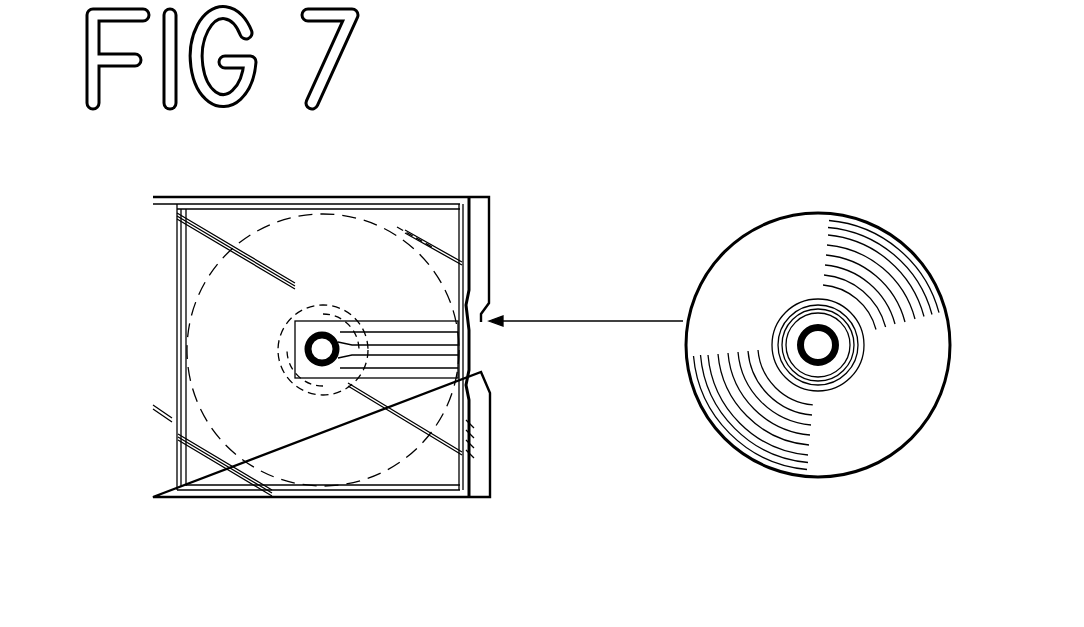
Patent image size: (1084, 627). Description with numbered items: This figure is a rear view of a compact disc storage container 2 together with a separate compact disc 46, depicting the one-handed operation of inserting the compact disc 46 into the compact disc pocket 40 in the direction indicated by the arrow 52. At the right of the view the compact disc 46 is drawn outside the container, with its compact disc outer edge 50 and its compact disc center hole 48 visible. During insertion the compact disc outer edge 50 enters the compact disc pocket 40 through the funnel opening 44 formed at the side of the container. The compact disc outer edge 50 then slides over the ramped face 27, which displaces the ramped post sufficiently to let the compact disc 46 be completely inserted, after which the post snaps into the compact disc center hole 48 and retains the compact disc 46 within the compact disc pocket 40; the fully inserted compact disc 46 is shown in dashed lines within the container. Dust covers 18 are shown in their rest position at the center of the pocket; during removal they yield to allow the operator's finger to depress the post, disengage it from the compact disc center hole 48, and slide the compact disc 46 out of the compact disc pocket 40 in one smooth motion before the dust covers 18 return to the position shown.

The compact disc storage container 2 is at (626, 165).
The dust covers 18 is at (470, 345).
The ramped face 27 is at (323, 330).
The compact disc pocket 40 is at (489, 215).
The funnel opening 44 is at (480, 250).
The compact disc 46 is at (398, 228).
The compact disc center hole 48 is at (832, 358).
The compact disc outer edge 50 is at (710, 420).
The arrow 52 is at (606, 321).